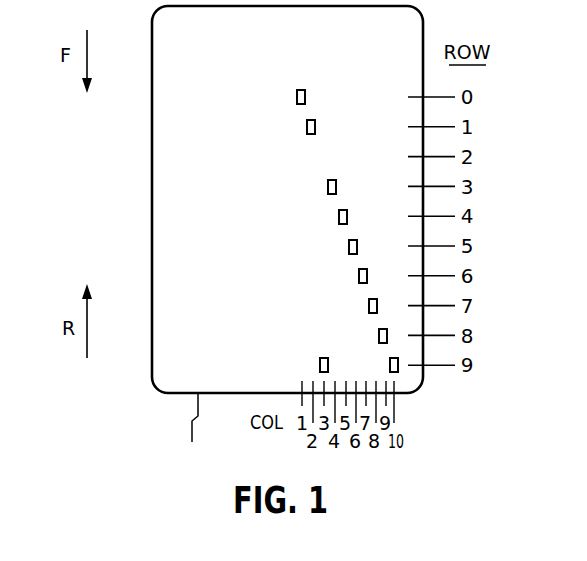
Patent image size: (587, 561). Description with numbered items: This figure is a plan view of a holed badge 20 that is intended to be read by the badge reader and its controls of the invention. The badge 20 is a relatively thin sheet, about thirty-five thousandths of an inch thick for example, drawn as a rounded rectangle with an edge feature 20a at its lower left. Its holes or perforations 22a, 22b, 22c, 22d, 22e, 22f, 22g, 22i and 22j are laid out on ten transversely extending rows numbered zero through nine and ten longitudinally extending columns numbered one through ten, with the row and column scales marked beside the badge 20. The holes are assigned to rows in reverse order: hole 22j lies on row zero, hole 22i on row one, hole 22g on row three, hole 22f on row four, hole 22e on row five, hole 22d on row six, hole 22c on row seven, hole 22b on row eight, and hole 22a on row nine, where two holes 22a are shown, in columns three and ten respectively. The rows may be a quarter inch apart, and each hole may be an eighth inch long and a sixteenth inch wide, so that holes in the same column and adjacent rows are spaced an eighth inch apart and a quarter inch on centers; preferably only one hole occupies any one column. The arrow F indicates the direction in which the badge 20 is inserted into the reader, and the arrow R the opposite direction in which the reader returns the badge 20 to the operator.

The badge 20 is at (147, 203).
The panel reference edge 20a is at (194, 434).
The hole 22a is at (390, 369).
The hole 22b is at (379, 336).
The hole 22c is at (369, 306).
The hole 22d is at (359, 276).
The hole 22e is at (349, 247).
The hole 22f is at (339, 217).
The hole 22g is at (328, 187).
The hole 22i is at (307, 127).
The hole 22j is at (297, 97).